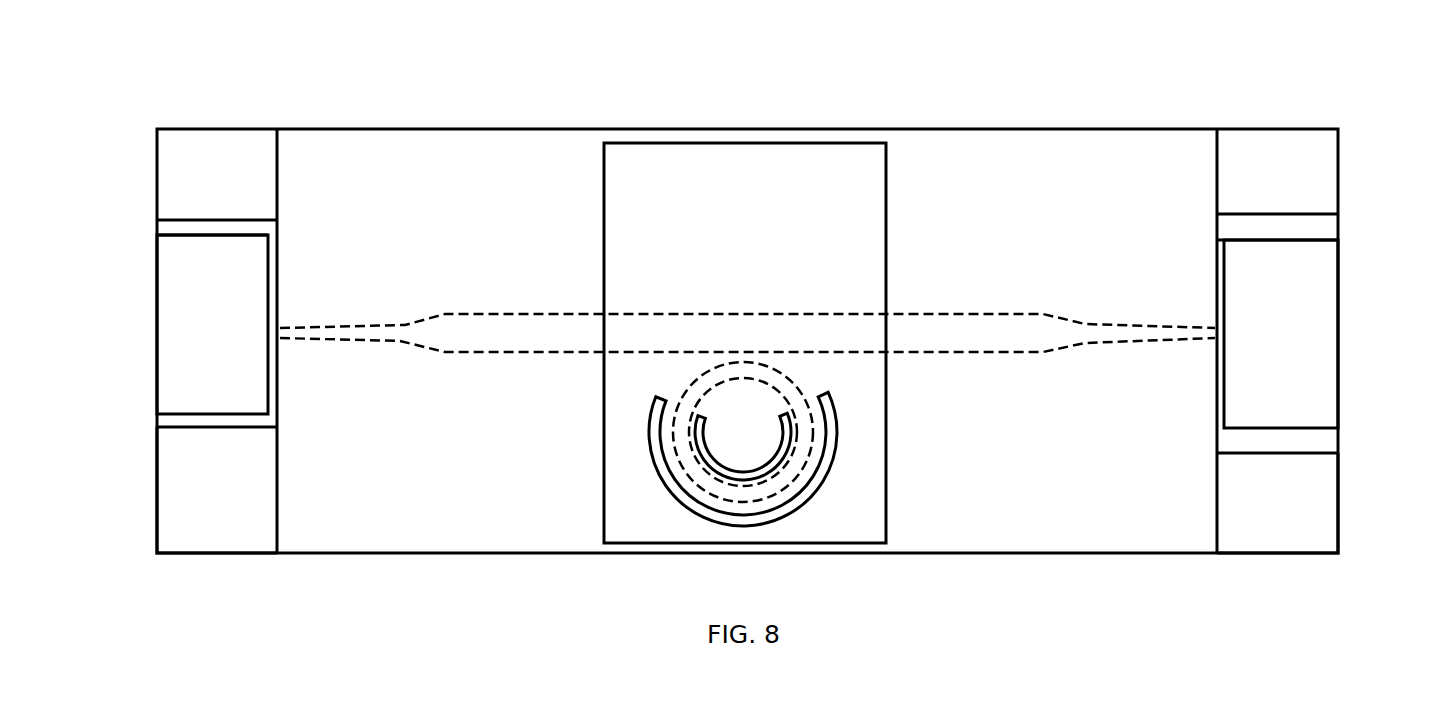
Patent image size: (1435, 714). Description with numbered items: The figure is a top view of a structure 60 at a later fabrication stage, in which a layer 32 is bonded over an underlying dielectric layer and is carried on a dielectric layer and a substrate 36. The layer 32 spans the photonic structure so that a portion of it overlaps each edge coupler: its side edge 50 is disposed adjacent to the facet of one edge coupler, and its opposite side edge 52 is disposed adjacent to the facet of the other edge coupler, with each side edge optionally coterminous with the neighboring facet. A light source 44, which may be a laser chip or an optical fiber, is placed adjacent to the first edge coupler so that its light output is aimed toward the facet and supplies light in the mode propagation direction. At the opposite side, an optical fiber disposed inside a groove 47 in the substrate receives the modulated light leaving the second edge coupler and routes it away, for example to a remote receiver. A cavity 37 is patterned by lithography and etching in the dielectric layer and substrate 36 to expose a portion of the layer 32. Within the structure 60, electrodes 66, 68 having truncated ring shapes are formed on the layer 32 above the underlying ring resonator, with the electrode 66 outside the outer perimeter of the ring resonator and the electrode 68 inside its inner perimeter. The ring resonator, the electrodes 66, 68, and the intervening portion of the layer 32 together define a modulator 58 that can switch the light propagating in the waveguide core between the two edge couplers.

The structure 60 is at (165, 88).
The substrate 36 is at (328, 181).
The light source 44 is at (190, 392).
The side edge 50 is at (277, 468).
The groove 47 is at (1243, 442).
The side edge 52 is at (1218, 512).
The layer 32 is at (832, 232).
The cavity 37 is at (757, 232).
The modulator 58 is at (588, 405).
The electrode 66 is at (656, 457).
The electrode 68 is at (785, 443).